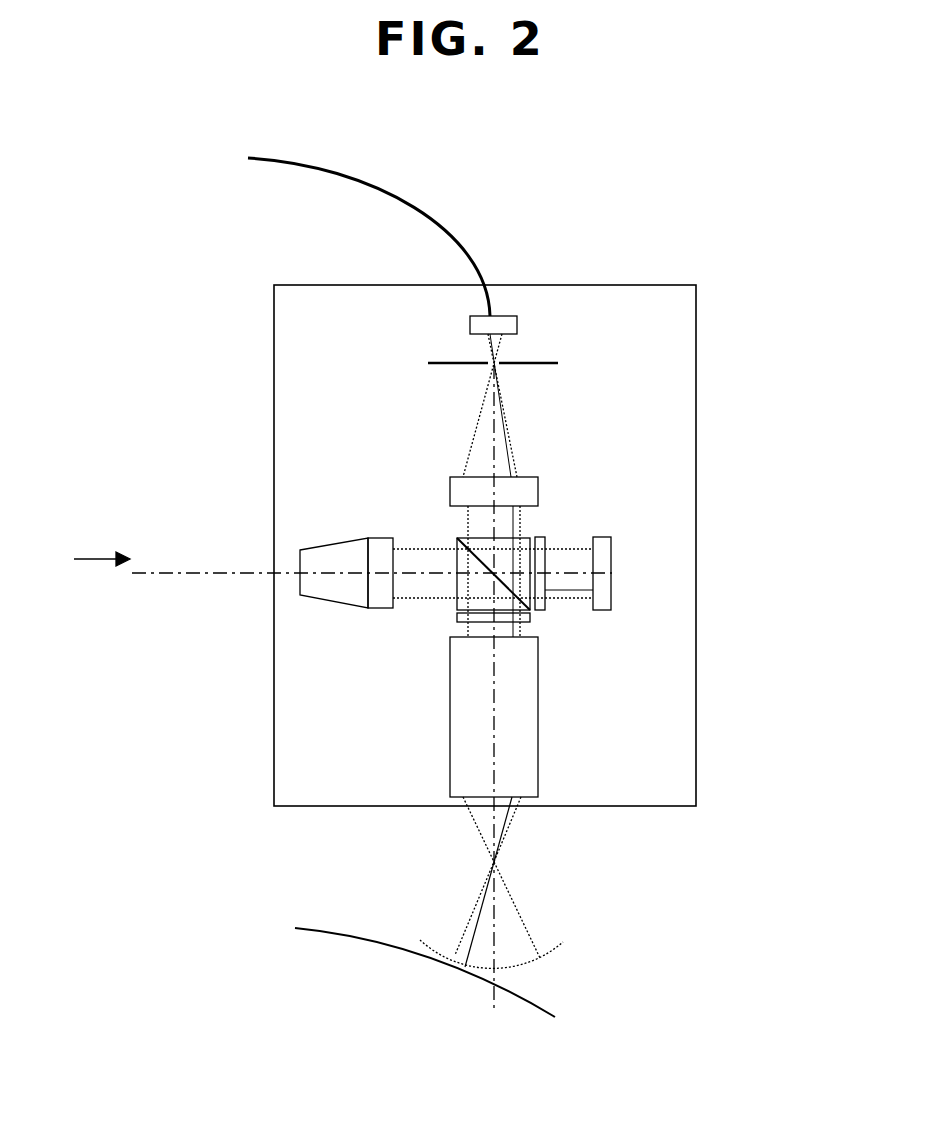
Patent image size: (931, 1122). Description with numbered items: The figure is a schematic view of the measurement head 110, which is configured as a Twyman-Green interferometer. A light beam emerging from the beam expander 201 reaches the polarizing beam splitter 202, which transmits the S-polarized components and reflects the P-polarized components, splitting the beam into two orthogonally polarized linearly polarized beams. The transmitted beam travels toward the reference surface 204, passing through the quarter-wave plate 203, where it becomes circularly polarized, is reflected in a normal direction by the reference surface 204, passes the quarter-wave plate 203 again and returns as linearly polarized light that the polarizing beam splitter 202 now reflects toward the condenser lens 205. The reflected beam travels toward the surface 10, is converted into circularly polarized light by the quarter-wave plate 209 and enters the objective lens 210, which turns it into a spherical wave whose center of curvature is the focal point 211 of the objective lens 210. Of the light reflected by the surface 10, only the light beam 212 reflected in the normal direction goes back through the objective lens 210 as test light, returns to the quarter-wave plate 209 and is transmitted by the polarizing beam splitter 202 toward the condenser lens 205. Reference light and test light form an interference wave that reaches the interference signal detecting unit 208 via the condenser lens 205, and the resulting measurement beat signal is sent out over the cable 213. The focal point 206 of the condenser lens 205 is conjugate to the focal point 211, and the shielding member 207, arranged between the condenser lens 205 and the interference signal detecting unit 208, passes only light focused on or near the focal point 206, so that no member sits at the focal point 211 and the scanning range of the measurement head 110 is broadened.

The measurement head 110 is at (273, 320).
The cable 213 is at (368, 172).
The interference signal detecting unit 208 is at (505, 318).
The shielding member 207 is at (558, 362).
The focal point of the condenser lens 206 is at (488, 366).
The condenser lens 205 is at (525, 490).
The beam expander 201 is at (330, 558).
The polarizing beam splitter 202 is at (457, 603).
The λ/4 plate 203 is at (543, 537).
The reference surface 204 is at (600, 568).
The λ/4 plate 209 is at (530, 617).
The objective lens 210 is at (515, 738).
The focal point 211 is at (500, 862).
The light beam 212 is at (477, 922).
The surface 10 is at (310, 928).